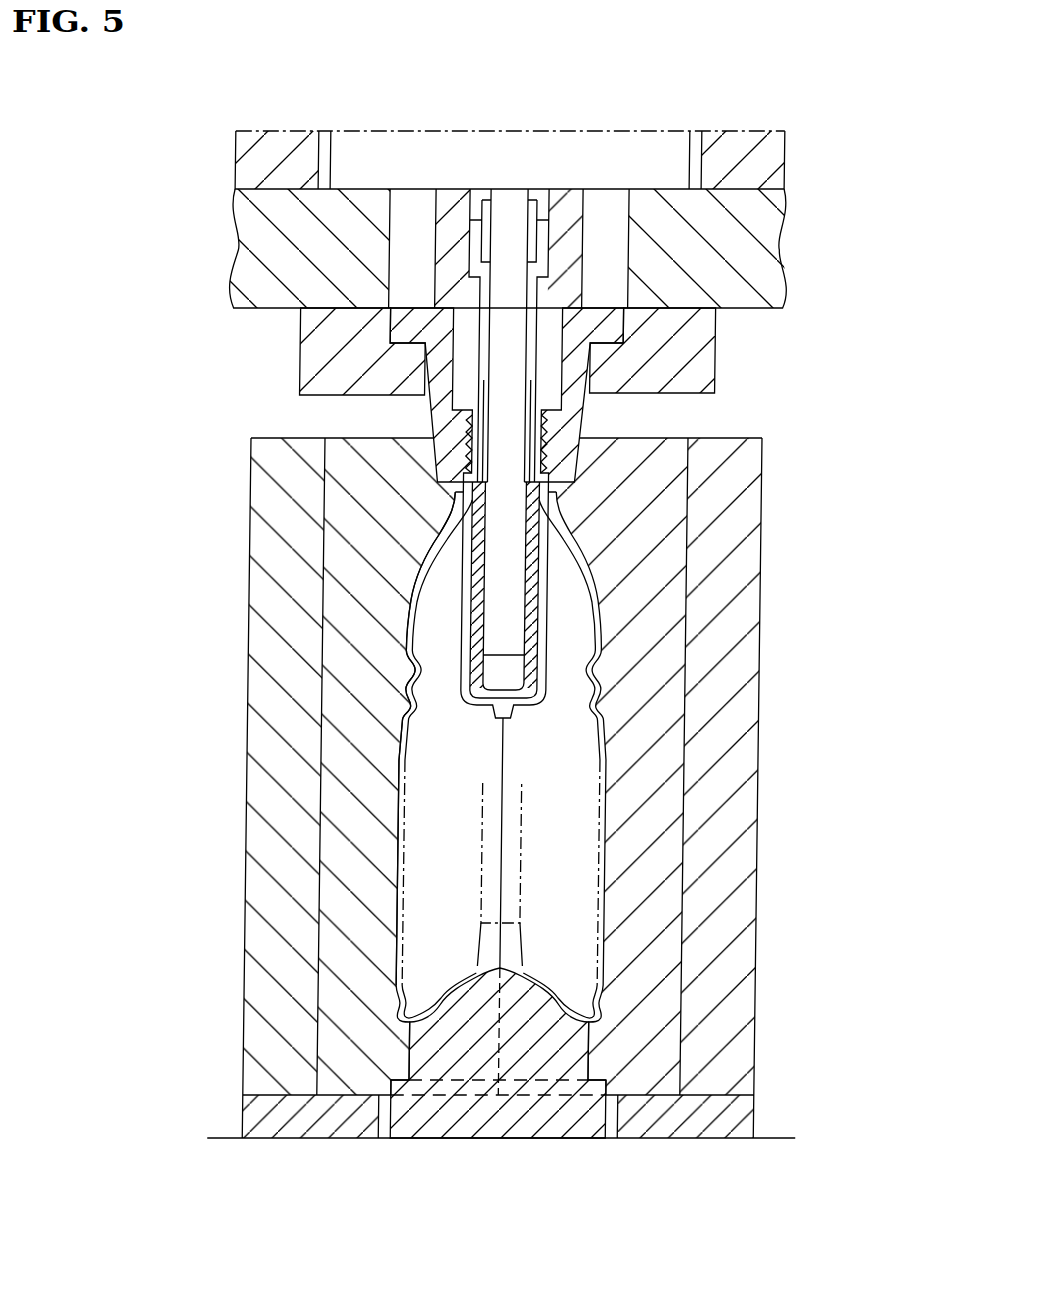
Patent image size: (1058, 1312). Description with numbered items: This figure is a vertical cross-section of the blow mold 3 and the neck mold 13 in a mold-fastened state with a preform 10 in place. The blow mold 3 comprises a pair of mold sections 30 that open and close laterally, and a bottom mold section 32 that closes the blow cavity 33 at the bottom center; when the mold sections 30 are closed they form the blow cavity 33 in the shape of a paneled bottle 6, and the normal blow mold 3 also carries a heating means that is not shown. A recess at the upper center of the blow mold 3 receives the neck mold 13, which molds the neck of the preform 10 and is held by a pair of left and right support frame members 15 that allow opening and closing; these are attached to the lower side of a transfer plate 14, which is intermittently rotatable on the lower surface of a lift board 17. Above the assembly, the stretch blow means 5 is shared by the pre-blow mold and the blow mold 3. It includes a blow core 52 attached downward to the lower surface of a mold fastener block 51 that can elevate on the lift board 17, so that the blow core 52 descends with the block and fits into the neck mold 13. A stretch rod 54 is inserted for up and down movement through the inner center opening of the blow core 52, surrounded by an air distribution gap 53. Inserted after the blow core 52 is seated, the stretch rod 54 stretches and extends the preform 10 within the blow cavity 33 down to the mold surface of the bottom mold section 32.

The stretch blow means 5 is at (561, 125).
The lift board 17 is at (264, 163).
The mold fastener block 51 is at (672, 159).
The transfer plate 14 is at (713, 239).
The support frame members 15 is at (688, 330).
The blow core 52 is at (424, 345).
The neck mold 13 is at (596, 382).
The air distribution gap 53 is at (455, 463).
The stretch rod 54 is at (514, 585).
The preform 10 is at (469, 668).
The blow mold 3 is at (250, 592).
The mold sections 30 is at (357, 822).
The blow cavity 33 is at (443, 877).
The bottom mold section 32 is at (513, 1060).
The paneled bottle 6 is at (611, 920).